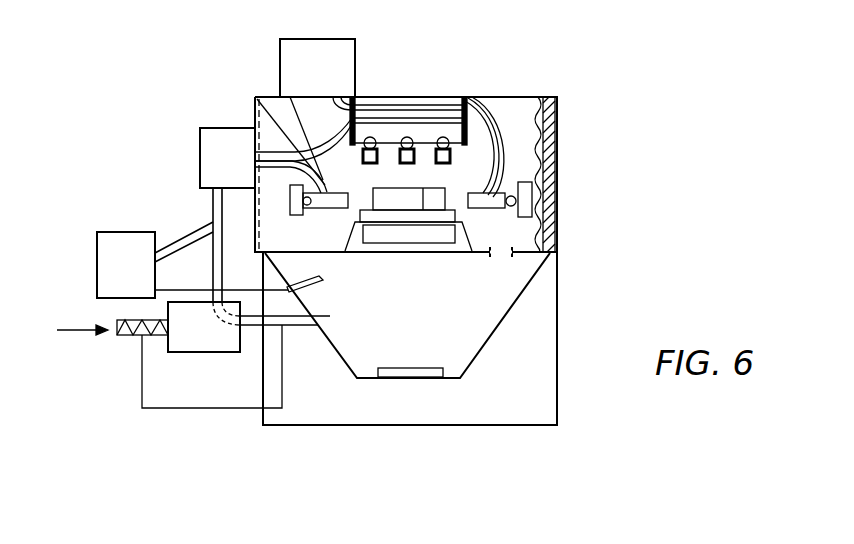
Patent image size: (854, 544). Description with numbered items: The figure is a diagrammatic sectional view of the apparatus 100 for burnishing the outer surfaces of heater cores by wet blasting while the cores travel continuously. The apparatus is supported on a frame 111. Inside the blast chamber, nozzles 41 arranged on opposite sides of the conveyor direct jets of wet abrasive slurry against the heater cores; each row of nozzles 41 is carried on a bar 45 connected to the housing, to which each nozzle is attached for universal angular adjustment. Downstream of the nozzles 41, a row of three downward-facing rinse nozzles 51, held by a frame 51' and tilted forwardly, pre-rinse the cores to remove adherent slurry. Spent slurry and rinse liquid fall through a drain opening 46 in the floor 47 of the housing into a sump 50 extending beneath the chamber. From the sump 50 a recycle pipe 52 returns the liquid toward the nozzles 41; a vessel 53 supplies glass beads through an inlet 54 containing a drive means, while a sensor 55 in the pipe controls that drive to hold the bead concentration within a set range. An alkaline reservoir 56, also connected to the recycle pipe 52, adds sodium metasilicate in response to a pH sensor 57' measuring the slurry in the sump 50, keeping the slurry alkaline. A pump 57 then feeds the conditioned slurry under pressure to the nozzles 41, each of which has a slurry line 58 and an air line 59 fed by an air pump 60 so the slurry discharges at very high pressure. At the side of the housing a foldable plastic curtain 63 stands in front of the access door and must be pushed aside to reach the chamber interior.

The apparatus 100 is at (574, 142).
The frame 111 is at (542, 355).
The nozzles 41 is at (333, 209).
The bar 45 is at (290, 202).
The drain opening 46 is at (505, 250).
The floor 47 is at (403, 254).
The sump 50 is at (426, 347).
The rinse nozzles 51 is at (428, 115).
The frame 51' is at (387, 98).
The recycle pipe 52 is at (213, 205).
The vessel 53 is at (197, 338).
The inlet 54 is at (128, 337).
The sensor 55 is at (264, 327).
The alkaline reservoir 56 is at (113, 265).
The pump 57 is at (198, 167).
The pH sensor 57' is at (265, 310).
The slurry line 58 is at (255, 123).
The air line 59 is at (290, 97).
The air pump 60 is at (293, 67).
The foldable plastic curtain 63 is at (532, 95).